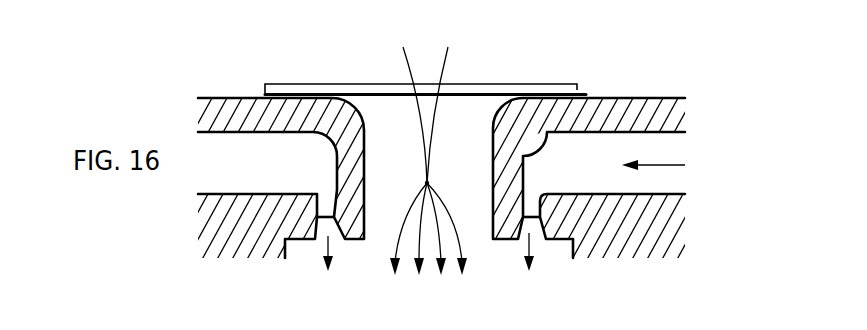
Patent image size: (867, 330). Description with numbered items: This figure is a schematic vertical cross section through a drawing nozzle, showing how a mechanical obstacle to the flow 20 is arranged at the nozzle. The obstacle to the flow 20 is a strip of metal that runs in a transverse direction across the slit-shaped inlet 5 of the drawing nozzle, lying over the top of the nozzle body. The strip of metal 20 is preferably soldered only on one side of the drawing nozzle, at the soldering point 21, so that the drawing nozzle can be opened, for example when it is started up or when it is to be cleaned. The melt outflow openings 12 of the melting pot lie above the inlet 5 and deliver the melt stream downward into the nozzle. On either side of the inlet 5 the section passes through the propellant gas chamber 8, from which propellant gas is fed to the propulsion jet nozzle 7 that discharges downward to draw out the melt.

The obstacle to the flow 20 is at (381, 84).
The soldering point 21 is at (583, 93).
The melt outflow openings 12 is at (437, 70).
The inlet of the drawing nozzle 5 is at (470, 164).
The propellant gas chamber 8 is at (670, 148).
The propulsion jet nozzle 7 is at (536, 232).